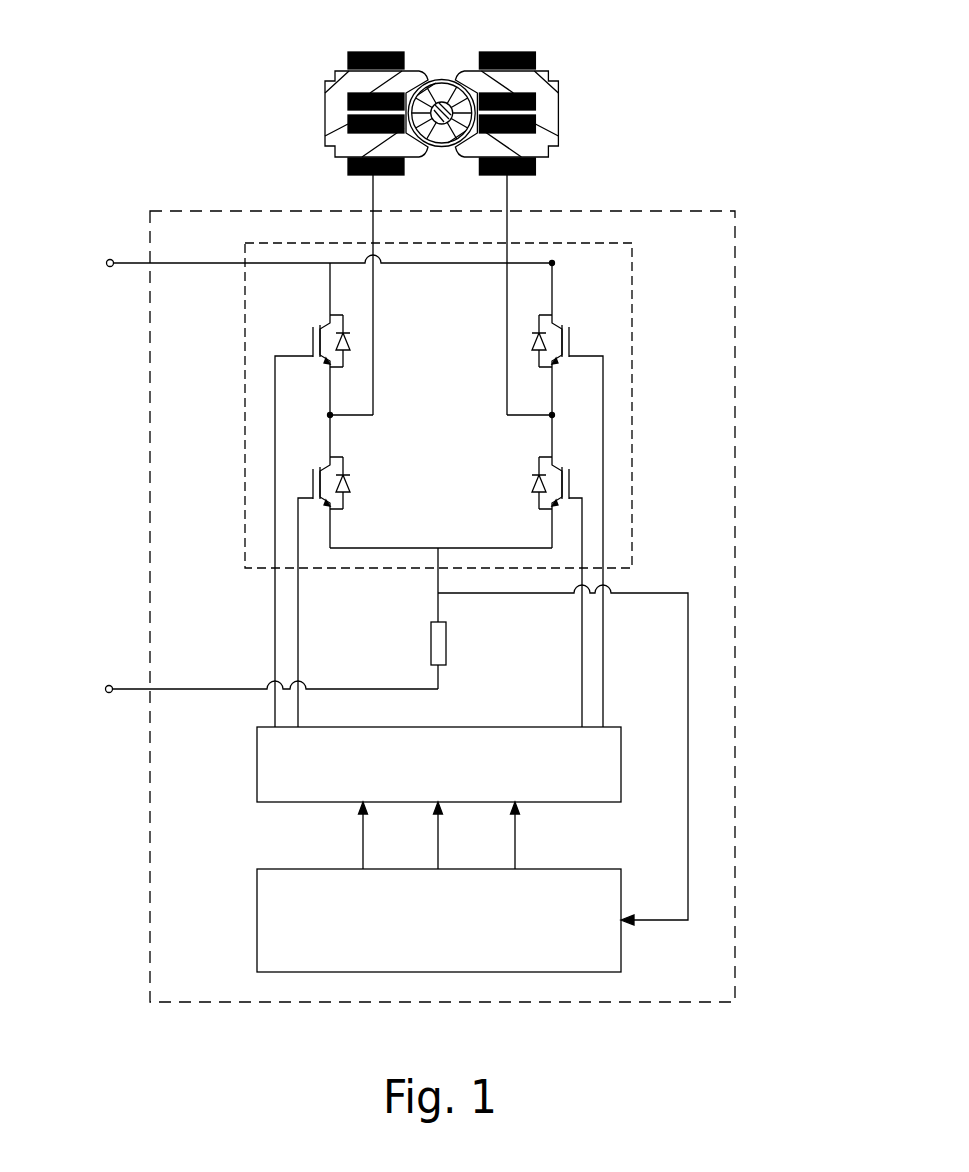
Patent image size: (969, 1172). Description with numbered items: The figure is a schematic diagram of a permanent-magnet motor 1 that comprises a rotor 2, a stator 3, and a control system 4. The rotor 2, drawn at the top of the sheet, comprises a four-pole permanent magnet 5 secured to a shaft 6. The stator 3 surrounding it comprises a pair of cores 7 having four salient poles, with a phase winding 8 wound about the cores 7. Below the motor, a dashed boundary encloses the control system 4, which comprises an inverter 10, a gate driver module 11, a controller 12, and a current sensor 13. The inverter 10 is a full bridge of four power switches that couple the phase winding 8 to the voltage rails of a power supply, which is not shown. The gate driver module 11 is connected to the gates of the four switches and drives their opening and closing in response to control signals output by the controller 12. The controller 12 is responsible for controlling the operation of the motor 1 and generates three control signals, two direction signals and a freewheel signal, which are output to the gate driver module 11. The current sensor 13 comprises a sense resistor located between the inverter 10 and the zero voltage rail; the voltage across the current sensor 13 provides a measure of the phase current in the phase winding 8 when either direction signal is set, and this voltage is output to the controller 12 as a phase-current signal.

The permanent-magnet motor 1 is at (705, 83).
The rotor 2 is at (442, 148).
The stator 3 is at (563, 110).
The control system 4 is at (735, 845).
The four-pole permanent magnet 5 is at (451, 81).
The shaft 6 is at (437, 103).
The cores 7 is at (325, 110).
The phase winding 8 is at (376, 51).
The inverter 10 is at (245, 468).
The gate driver module 11 is at (257, 767).
The controller 12 is at (257, 925).
The current sensor 13 is at (447, 645).